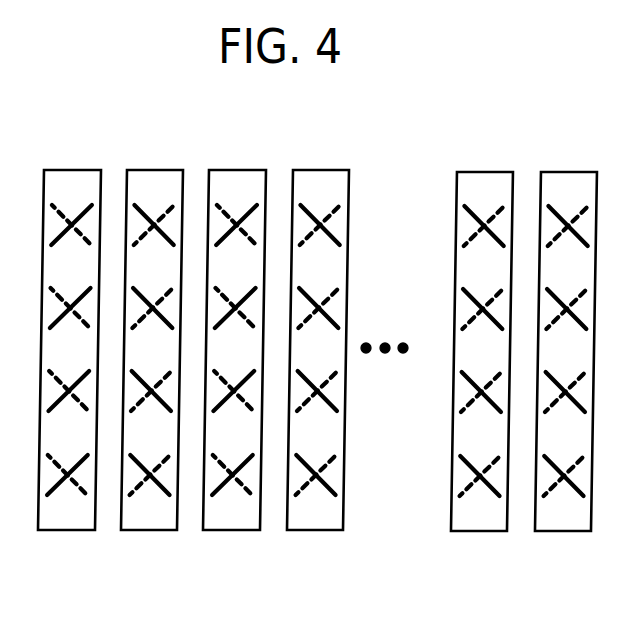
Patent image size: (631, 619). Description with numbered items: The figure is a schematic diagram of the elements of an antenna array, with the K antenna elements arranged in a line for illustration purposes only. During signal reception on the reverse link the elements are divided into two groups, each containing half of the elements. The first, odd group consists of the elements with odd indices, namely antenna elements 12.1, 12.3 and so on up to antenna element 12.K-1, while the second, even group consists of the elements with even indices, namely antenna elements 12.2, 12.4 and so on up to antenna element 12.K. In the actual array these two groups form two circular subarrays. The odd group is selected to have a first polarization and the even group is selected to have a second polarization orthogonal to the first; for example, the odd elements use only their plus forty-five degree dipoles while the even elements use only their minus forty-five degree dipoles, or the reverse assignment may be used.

The antenna element 12.1 is at (60, 530).
The antenna element 12.2 is at (155, 170).
The antenna element 12.3 is at (227, 530).
The antenna element 12.4 is at (320, 170).
The antenna element 12.K-1 is at (475, 531).
The antenna element 12.K is at (584, 146).